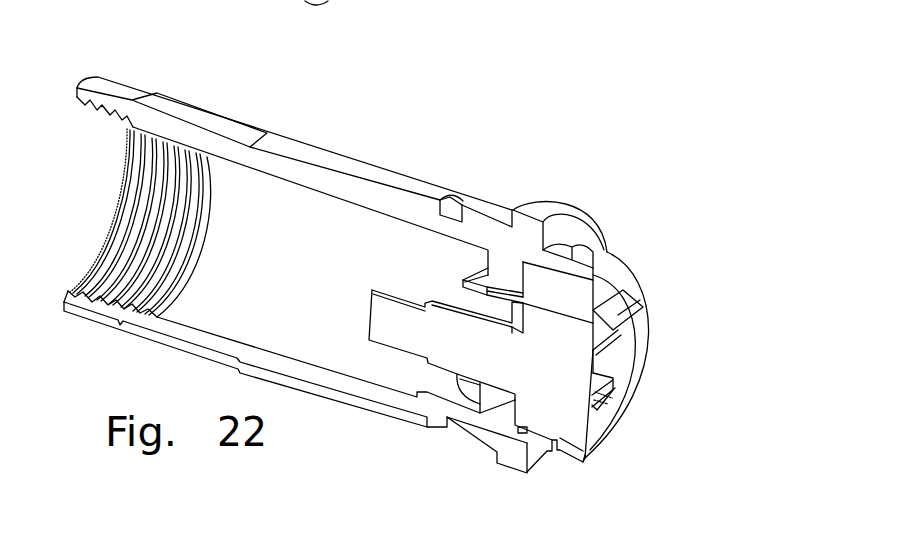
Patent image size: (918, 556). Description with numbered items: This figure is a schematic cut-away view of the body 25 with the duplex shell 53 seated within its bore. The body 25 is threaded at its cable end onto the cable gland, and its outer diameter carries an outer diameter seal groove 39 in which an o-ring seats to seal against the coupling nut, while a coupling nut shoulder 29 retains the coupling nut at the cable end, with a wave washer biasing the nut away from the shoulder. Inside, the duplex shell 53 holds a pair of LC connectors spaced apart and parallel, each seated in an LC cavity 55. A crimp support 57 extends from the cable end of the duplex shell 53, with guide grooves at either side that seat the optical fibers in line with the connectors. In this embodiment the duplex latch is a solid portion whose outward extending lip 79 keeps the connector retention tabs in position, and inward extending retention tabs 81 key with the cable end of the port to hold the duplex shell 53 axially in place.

The body 25 is at (128, 97).
The coupling nut shoulder 29 is at (560, 223).
The outer diameter seal groove 39 is at (463, 203).
The duplex shell 53 is at (570, 417).
The LC cavity 55 is at (613, 368).
The crimp support 57 is at (396, 293).
The outward extending lip 79 is at (622, 315).
The inward extending retention tabs 81 is at (470, 397).